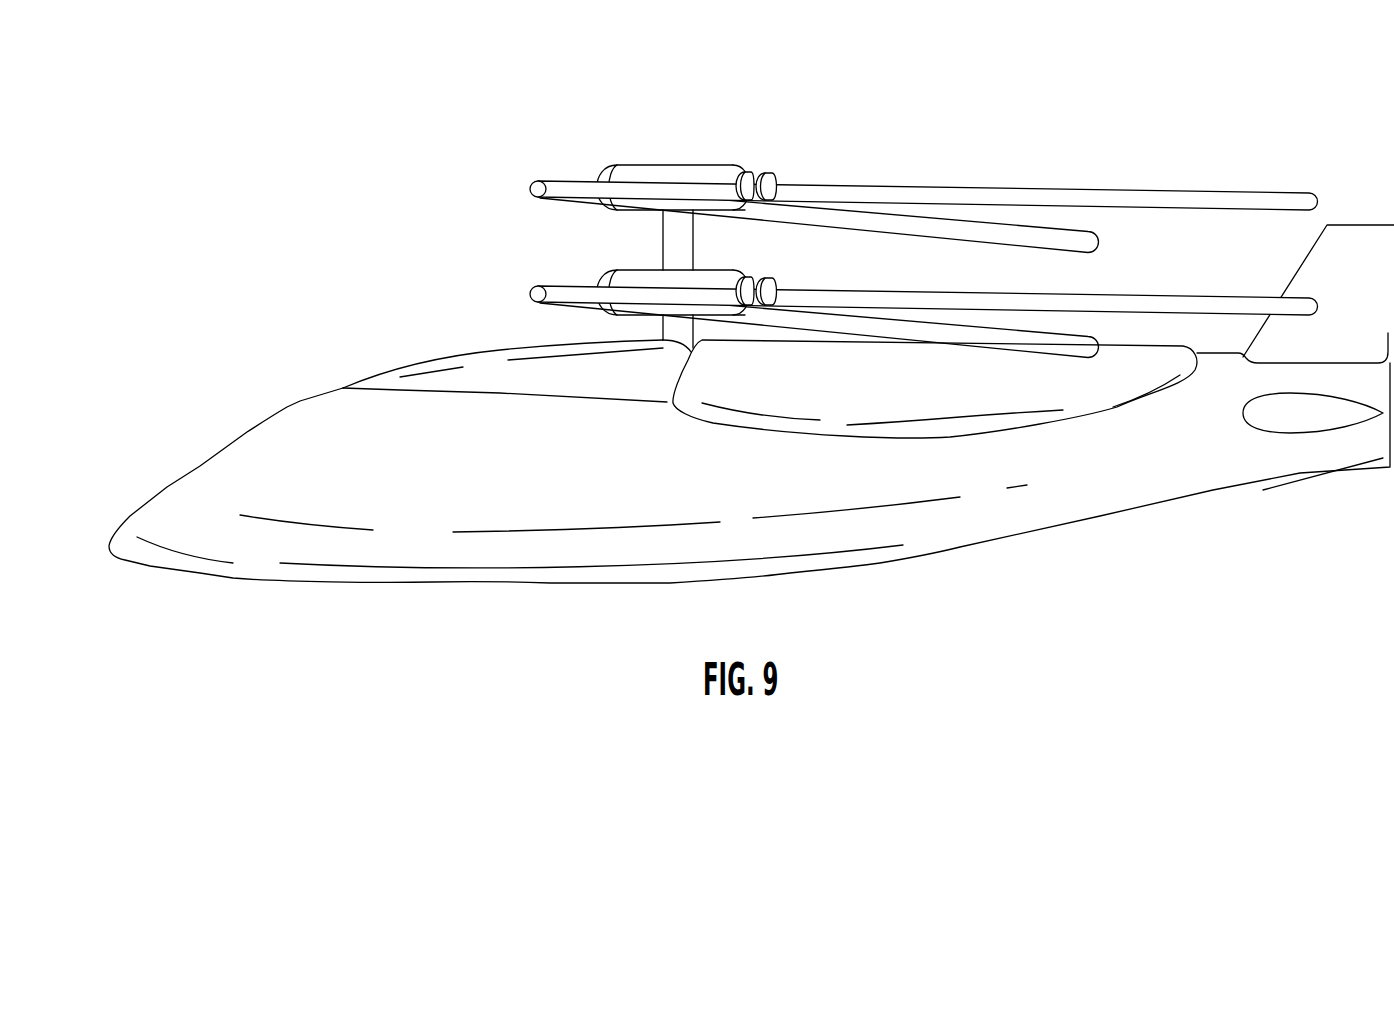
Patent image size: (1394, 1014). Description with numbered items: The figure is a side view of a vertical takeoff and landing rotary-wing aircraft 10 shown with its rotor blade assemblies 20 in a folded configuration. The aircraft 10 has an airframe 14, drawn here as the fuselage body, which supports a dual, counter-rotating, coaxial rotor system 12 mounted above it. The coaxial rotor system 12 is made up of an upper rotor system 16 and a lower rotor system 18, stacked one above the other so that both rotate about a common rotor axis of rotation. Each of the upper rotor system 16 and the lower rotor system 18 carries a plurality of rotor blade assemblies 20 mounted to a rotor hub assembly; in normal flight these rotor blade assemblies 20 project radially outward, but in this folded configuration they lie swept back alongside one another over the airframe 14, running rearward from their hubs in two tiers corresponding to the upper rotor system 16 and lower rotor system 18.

The rotary-wing aircraft 10 is at (751, 340).
The coaxial rotor system 12 is at (835, 192).
The airframe 14 is at (751, 439).
The upper rotor system 16 is at (900, 154).
The lower rotor system 18 is at (898, 261).
The rotor blade assemblies 20 is at (898, 206).